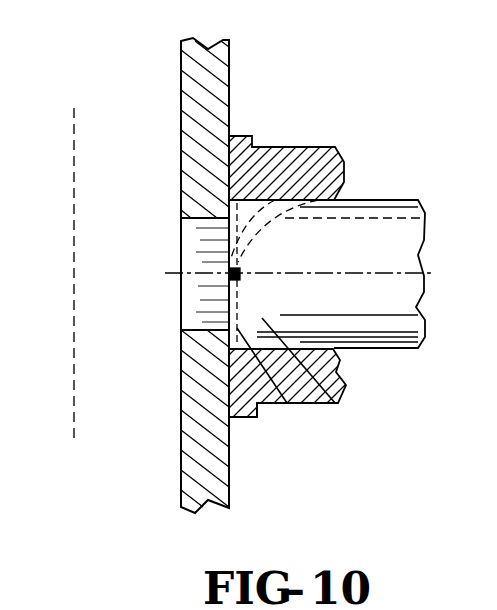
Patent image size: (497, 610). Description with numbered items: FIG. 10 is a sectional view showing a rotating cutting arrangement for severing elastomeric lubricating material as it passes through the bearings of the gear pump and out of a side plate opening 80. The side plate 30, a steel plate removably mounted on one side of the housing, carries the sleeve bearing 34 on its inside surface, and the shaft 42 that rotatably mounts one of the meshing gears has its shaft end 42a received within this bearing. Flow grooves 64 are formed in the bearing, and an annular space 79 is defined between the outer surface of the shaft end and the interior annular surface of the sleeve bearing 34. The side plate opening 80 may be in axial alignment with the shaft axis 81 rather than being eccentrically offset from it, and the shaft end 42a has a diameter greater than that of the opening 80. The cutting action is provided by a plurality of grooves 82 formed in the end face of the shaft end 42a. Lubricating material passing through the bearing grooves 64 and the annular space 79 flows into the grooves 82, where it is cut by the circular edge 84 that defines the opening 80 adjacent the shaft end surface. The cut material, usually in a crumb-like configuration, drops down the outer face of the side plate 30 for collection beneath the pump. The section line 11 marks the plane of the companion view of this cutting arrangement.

The section line 11 is at (104, 452).
The side plate 30 is at (229, 90).
The sleeve bearing 34 is at (257, 418).
The shaft 42 is at (402, 200).
The shaft end 42a is at (332, 403).
The flow grooves 64 is at (272, 200).
The annular space 79 is at (317, 347).
The side plate opening 80 is at (198, 220).
The shaft axis 81 is at (362, 272).
The grooves 82 is at (289, 407).
The circular edge 84 is at (228, 330).